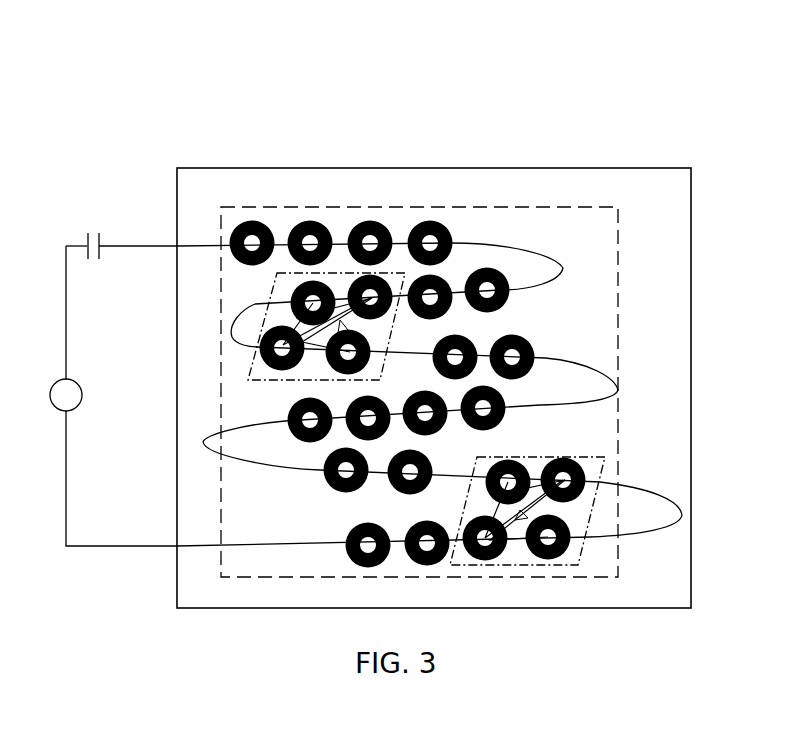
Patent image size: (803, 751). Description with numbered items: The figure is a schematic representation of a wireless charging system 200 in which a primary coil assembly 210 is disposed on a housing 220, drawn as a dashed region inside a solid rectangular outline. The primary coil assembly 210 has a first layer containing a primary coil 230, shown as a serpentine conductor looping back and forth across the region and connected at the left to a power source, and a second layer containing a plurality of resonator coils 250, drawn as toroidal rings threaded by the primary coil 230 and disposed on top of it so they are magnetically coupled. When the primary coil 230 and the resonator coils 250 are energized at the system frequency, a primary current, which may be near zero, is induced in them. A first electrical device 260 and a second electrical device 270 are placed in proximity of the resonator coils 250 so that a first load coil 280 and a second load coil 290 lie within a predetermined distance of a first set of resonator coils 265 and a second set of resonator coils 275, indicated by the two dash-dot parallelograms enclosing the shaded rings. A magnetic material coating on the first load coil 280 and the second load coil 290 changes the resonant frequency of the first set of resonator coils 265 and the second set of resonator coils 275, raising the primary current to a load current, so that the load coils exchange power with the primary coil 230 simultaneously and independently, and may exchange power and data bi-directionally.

The wireless charging system 200 is at (622, 56).
The primary coil assembly 210 is at (515, 205).
The housing 220 is at (656, 168).
The primary coil 230 is at (572, 366).
The resonator coils 250 is at (300, 224).
The first electrical device 260 is at (365, 322).
The first set of resonator coils 265 is at (275, 280).
The second electrical device 270 is at (560, 512).
The second set of resonator coils 275 is at (476, 492).
The first load coil 280 is at (320, 345).
The second load coil 290 is at (515, 528).